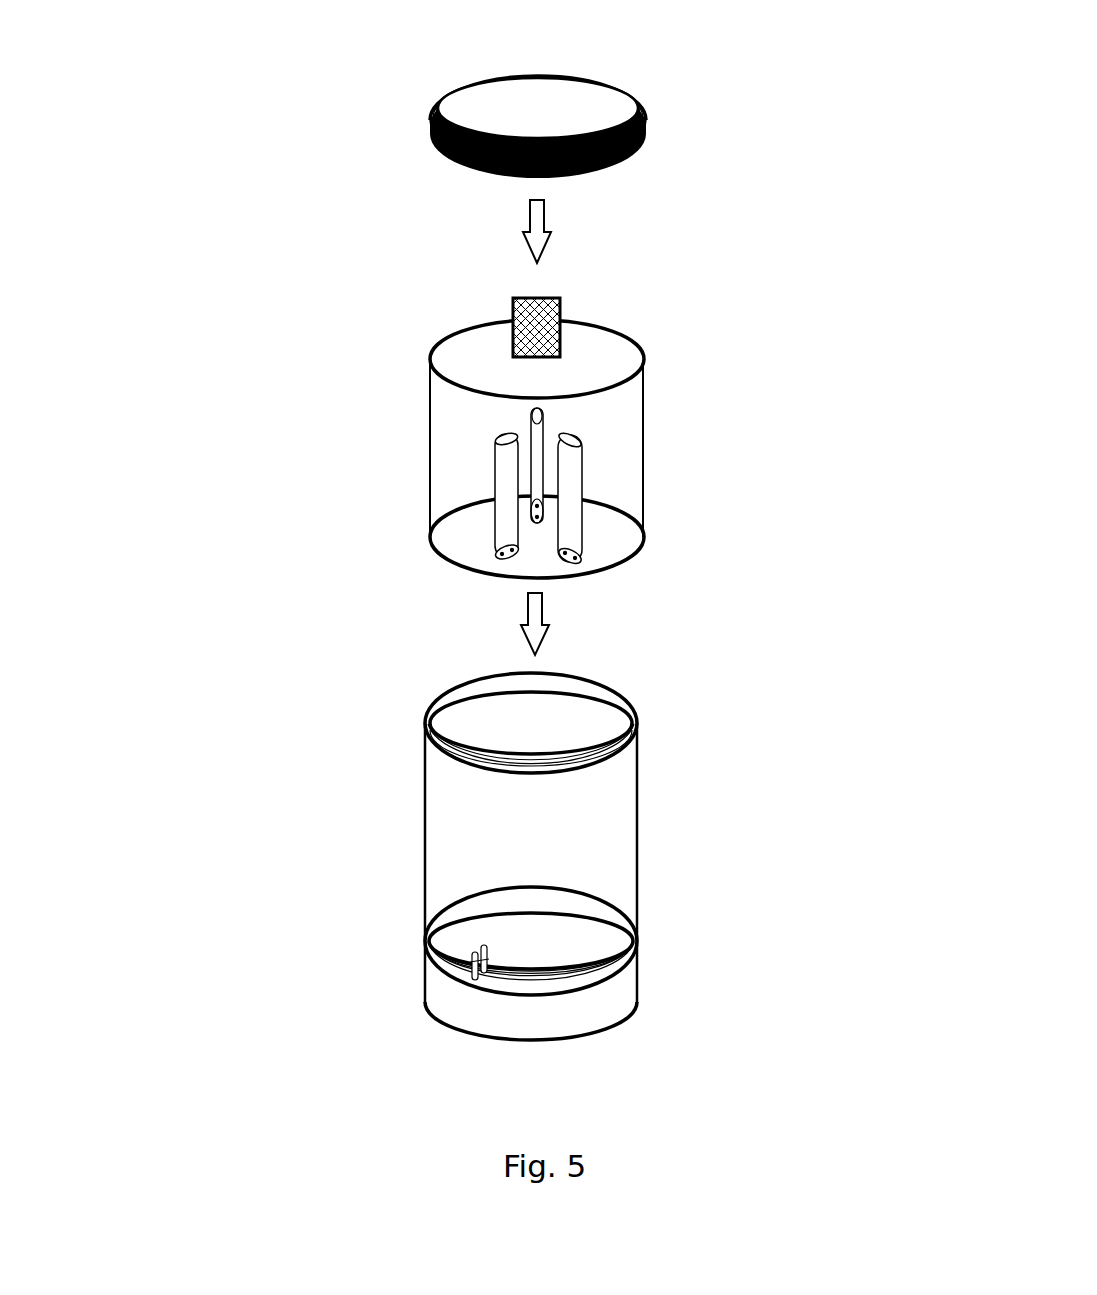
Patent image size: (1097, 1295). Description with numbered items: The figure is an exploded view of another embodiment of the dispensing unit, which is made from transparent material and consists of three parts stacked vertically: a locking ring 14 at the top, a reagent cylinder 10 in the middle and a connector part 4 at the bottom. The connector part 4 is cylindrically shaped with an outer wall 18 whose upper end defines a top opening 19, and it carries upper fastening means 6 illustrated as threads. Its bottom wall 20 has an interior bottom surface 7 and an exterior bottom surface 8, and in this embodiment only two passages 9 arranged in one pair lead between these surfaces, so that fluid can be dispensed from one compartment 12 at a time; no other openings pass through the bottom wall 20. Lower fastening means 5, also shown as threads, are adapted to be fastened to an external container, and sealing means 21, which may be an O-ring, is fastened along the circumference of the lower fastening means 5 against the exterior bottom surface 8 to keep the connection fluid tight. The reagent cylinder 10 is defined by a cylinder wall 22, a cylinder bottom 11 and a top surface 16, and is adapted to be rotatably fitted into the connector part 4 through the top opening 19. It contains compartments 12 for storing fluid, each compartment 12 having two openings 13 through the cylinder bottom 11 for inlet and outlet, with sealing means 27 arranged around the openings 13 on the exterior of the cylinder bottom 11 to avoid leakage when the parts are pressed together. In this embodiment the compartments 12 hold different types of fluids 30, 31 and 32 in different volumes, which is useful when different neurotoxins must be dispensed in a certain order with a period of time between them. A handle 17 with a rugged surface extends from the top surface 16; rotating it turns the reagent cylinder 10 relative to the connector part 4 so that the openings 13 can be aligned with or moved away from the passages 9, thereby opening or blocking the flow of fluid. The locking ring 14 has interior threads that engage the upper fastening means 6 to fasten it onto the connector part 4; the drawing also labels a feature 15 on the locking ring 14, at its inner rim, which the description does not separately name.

The connector part 4 is at (298, 660).
The lower fastening means 5 is at (455, 940).
The upper fastening means 6 is at (637, 746).
The interior bottom surface 7 is at (620, 913).
The exterior bottom surface 8 is at (598, 977).
The passages 9 is at (468, 972).
The reagent cylinder 10 is at (348, 310).
The cylinder bottom 11 is at (612, 523).
The compartments 12 is at (568, 495).
The openings 13 is at (573, 555).
The locking ring 14 is at (372, 113).
The lid rim 15 is at (601, 97).
The top surface 16 is at (607, 357).
The handle 17 is at (545, 310).
The outer wall 18 is at (637, 851).
The top opening 19 is at (520, 722).
The bottom wall 20 is at (455, 913).
The sealing means 21 is at (620, 929).
The cylinder wall 22 is at (645, 392).
The sealing means 27 is at (510, 557).
The fluid 30 is at (508, 492).
The fluid 31 is at (563, 460).
The fluid 32 is at (537, 483).